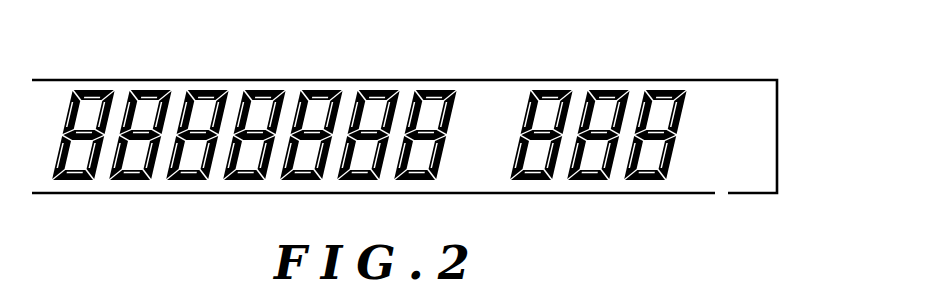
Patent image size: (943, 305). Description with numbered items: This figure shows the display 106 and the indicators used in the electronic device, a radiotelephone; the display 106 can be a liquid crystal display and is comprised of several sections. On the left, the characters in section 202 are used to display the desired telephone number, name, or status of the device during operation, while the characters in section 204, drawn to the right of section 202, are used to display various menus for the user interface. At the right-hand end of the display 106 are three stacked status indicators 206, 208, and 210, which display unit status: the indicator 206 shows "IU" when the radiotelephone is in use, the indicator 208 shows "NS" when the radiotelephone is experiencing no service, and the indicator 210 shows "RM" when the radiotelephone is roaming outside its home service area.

The display 106 is at (138, 64).
The section 202 is at (208, 79).
The section 204 is at (608, 91).
The indicator 206 is at (762, 109).
The indicator 208 is at (760, 143).
The indicator 210 is at (735, 171).